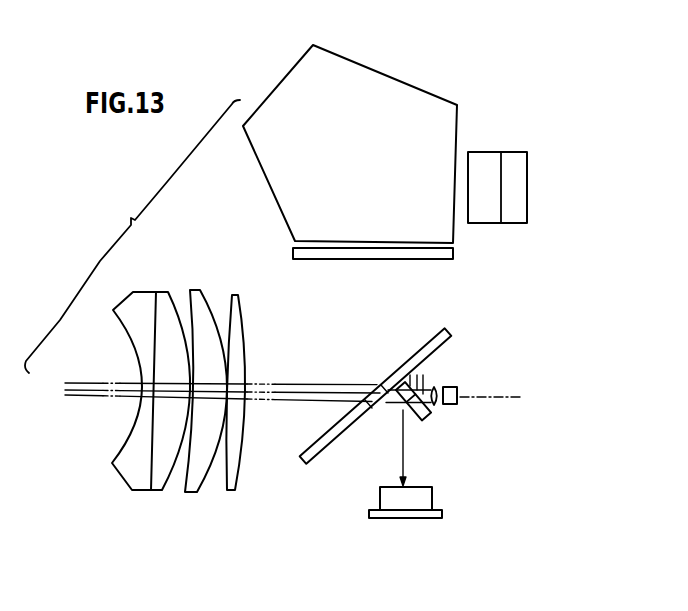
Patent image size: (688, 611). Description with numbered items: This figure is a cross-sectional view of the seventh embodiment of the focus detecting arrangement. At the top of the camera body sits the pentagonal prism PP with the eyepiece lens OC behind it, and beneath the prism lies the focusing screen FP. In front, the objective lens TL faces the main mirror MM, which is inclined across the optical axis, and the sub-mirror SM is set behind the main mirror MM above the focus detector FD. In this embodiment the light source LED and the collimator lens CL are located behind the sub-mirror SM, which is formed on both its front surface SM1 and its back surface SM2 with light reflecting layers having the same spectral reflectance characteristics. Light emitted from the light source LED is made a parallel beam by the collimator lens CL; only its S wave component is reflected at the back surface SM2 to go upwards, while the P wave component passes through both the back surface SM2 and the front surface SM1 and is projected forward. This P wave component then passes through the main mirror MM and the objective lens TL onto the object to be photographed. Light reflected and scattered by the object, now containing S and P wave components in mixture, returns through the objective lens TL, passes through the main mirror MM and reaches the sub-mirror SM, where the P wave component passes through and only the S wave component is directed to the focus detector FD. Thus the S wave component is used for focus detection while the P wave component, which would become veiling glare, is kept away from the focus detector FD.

The pentagonal prism PP is at (405, 93).
The eyepiece lens OC is at (492, 152).
The focusing screen FP is at (297, 250).
The objective lens TL is at (192, 288).
The main mirror MM is at (420, 350).
The sub-mirror SM is at (423, 418).
The front surface of the sub-mirror SM1 is at (408, 403).
The back surface of the sub-mirror SM2 is at (428, 410).
The collimator lens CL is at (433, 388).
The light source LED is at (453, 388).
The focus detector FD is at (380, 488).